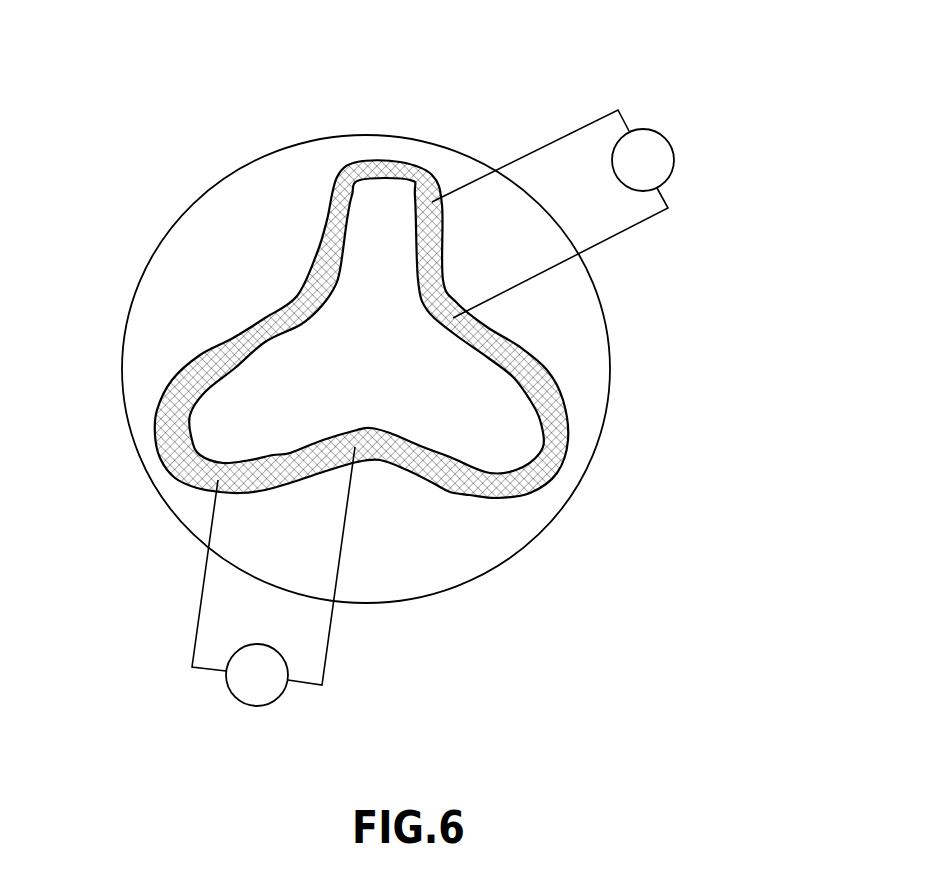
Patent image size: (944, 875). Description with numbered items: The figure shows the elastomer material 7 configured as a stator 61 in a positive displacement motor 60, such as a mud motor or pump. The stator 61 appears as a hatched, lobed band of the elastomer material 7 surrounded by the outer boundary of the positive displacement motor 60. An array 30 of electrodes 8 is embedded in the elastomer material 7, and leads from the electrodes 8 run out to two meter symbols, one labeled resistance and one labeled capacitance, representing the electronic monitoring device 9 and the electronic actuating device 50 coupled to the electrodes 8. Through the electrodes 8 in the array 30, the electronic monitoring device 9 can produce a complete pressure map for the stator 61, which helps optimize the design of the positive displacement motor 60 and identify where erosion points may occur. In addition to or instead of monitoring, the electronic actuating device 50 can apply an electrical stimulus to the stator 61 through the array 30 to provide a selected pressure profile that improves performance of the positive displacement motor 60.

The positive displacement motor 60 is at (155, 97).
The stator 61 is at (570, 441).
The elastomer material 7 is at (325, 263).
The electrodes 8 is at (468, 182).
The array 30 is at (207, 517).
The electronic monitoring device 9 is at (650, 130).
The electronic actuating device 50 is at (227, 690).